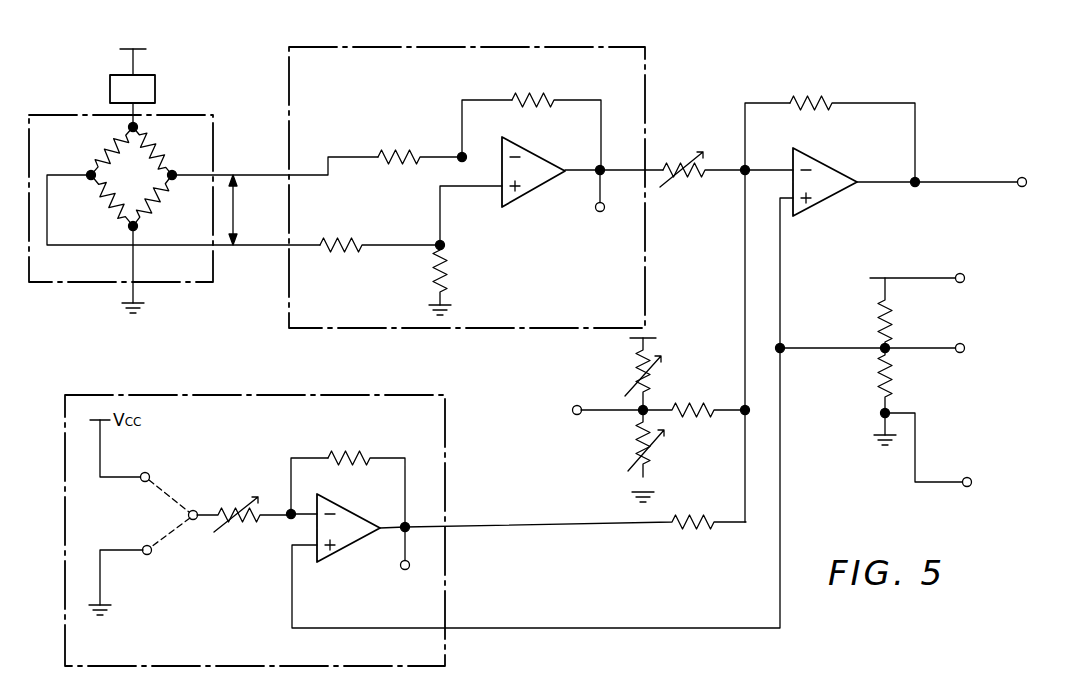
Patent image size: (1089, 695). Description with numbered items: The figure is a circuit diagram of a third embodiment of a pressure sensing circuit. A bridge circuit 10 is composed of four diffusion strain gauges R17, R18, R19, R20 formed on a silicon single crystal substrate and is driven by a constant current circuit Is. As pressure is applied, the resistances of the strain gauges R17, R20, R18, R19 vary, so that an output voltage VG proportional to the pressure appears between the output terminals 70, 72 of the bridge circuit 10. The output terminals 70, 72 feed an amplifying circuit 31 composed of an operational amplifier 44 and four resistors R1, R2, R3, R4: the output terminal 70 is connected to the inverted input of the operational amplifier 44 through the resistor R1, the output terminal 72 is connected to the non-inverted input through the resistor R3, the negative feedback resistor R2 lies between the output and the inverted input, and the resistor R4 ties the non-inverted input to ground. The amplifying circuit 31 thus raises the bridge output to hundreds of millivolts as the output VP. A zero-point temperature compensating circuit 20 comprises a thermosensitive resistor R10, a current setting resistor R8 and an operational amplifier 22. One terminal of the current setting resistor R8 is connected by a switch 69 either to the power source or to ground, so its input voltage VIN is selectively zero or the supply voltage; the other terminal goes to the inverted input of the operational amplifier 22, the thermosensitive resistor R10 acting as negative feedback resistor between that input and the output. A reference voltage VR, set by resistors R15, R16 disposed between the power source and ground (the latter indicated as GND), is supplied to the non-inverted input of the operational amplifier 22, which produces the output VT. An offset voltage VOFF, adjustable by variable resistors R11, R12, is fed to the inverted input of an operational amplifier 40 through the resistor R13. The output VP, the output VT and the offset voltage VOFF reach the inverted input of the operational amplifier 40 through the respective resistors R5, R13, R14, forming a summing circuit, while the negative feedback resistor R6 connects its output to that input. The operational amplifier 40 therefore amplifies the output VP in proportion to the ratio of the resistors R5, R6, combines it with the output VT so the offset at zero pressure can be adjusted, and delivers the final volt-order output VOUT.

The bridge circuit 10 is at (100, 114).
The constant current circuit Is is at (156, 89).
The diffusion strain gauge R17 is at (103, 160).
The diffusion strain gauge R18 is at (162, 160).
The diffusion strain gauge R19 is at (113, 208).
The diffusion strain gauge R20 is at (151, 208).
The output terminal 72 is at (86, 174).
The output terminal 70 is at (173, 174).
The output voltage VG is at (245, 210).
The amplifying circuit 31 is at (647, 82).
The resistor R1 is at (410, 138).
The negative feedback resistor R2 is at (548, 80).
The resistor R3 is at (356, 224).
The resistor R4 is at (447, 272).
The operational amplifier 44 is at (520, 200).
The output VP is at (605, 205).
The resistor R5 is at (697, 150).
The negative feedback resistor R6 is at (828, 82).
The operational amplifier 40 is at (838, 194).
The output VOUT is at (962, 183).
The resistor R15 is at (902, 304).
The reference voltage VR is at (886, 349).
The resistor R16 is at (902, 399).
The ground terminal GND is at (952, 453).
The variable resistor R11 is at (628, 372).
The variable resistor R12 is at (631, 449).
The offset voltage VOFF is at (580, 412).
The resistor R13 is at (678, 409).
The resistor R14 is at (700, 516).
The zero-point temperature compensating circuit 20 is at (255, 511).
The switch 69 is at (183, 497).
The input voltage VIN is at (139, 578).
The current setting resistor R8 is at (252, 503).
The thermosensitive resistor R10 is at (336, 455).
The operational amplifier 22 is at (347, 548).
The output VT is at (404, 563).